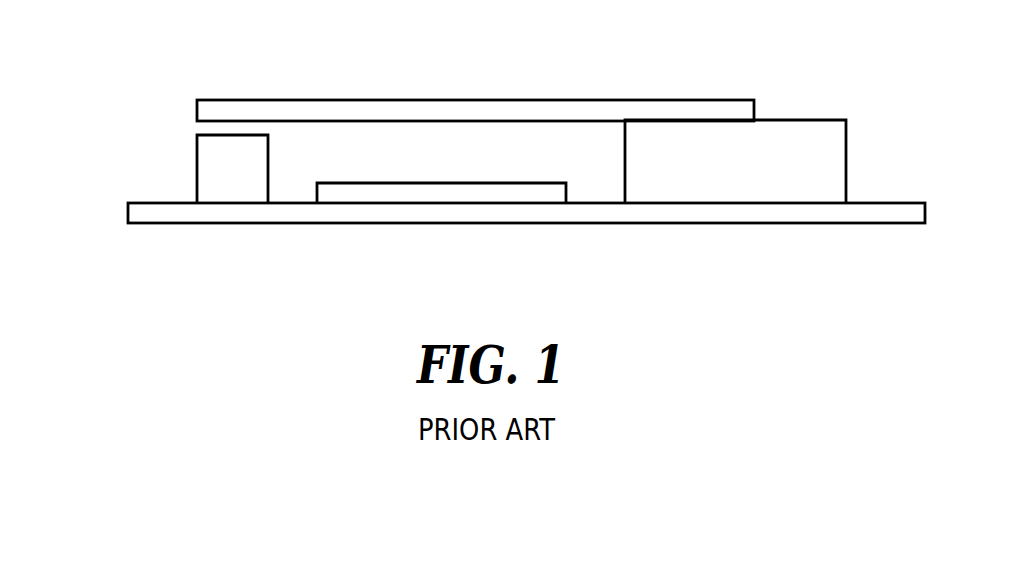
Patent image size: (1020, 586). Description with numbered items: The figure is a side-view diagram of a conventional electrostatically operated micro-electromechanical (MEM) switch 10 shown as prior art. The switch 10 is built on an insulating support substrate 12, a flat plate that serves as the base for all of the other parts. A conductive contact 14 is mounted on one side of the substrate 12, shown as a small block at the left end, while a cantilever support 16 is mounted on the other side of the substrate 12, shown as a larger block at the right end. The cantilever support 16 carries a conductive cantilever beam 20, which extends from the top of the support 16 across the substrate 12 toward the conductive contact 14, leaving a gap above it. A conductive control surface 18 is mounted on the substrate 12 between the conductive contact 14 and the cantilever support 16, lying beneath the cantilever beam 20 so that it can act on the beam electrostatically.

The switch 10 is at (137, 100).
The insulating support substrate 12 is at (593, 213).
The conductive contact 14 is at (205, 162).
The cantilever support 16 is at (798, 148).
The conductive control surface 18 is at (353, 197).
The conductive cantilever beam 20 is at (667, 110).